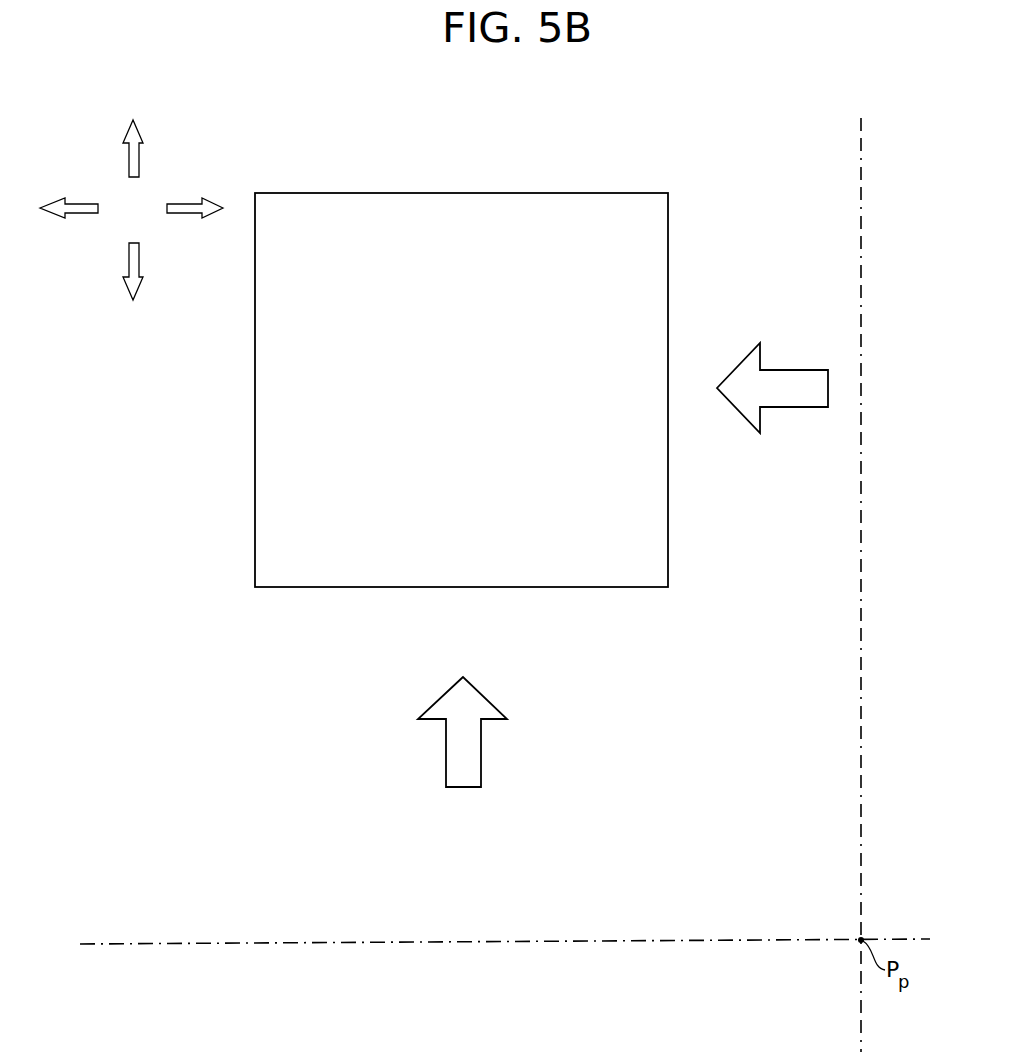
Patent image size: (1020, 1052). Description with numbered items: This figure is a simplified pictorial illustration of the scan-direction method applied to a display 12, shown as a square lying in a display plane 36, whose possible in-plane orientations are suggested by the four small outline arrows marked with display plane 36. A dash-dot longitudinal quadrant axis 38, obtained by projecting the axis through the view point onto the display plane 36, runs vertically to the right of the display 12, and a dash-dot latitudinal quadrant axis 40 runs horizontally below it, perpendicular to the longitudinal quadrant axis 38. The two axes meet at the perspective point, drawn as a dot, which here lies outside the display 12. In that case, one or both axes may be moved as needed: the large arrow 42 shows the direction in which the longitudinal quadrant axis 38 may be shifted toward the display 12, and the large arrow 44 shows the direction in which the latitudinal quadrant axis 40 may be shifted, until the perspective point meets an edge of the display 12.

The display 12 is at (362, 139).
The display plane 36 is at (119, 223).
The longitudinal quadrant axis 38 is at (860, 193).
The latitudinal quadrant axis 40 is at (233, 945).
The arrow 42 is at (793, 388).
The arrow 44 is at (473, 752).